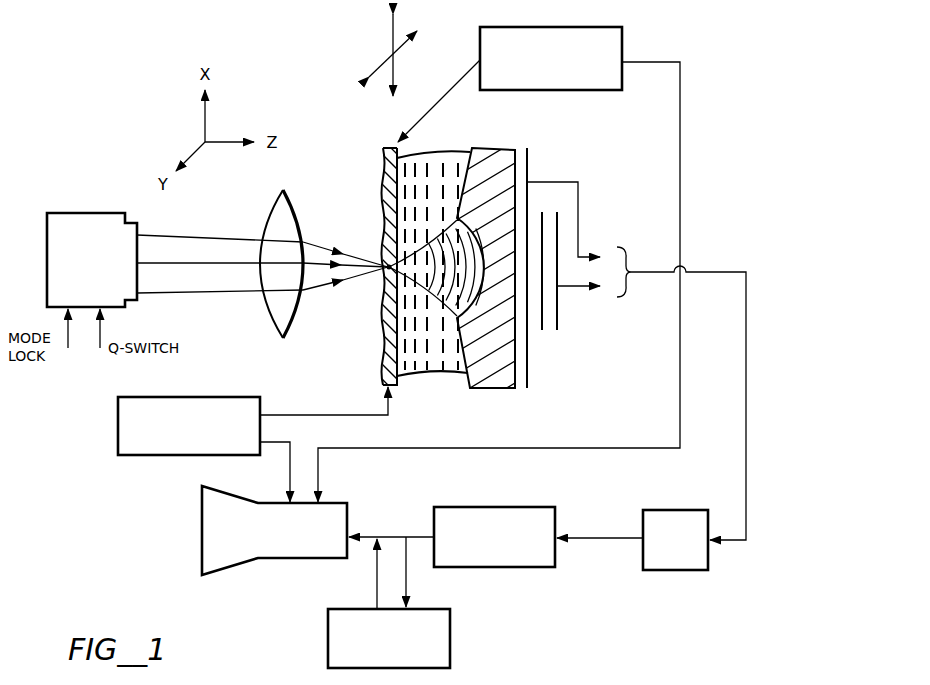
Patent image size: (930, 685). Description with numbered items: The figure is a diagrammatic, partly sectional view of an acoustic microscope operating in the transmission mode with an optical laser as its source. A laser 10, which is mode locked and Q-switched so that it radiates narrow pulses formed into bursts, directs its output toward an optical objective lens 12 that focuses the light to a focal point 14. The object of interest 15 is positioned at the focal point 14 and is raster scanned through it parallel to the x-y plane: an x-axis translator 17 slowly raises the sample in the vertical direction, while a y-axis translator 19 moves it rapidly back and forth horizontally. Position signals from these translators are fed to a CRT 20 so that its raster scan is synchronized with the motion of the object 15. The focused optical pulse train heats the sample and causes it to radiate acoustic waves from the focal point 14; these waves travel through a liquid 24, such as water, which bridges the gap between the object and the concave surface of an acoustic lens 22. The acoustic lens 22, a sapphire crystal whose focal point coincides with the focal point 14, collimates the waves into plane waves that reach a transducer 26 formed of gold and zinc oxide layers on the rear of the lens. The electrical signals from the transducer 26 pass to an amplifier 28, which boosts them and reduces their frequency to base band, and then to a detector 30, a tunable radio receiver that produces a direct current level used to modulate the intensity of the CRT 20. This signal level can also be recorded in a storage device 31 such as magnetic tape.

The laser 10 is at (88, 213).
The optical objective lens 12 is at (300, 206).
The focal point 14 is at (388, 272).
The object of interest 15 is at (385, 353).
The x-axis translator 17 is at (118, 427).
The y-axis translator 19 is at (590, 90).
The CRT 20 is at (202, 552).
The acoustic lens 22 is at (492, 148).
The liquid 24 is at (443, 376).
The transducer 26 is at (548, 340).
The amplifier 28 is at (668, 571).
The detector 30 is at (506, 507).
The storage device 31 is at (450, 638).